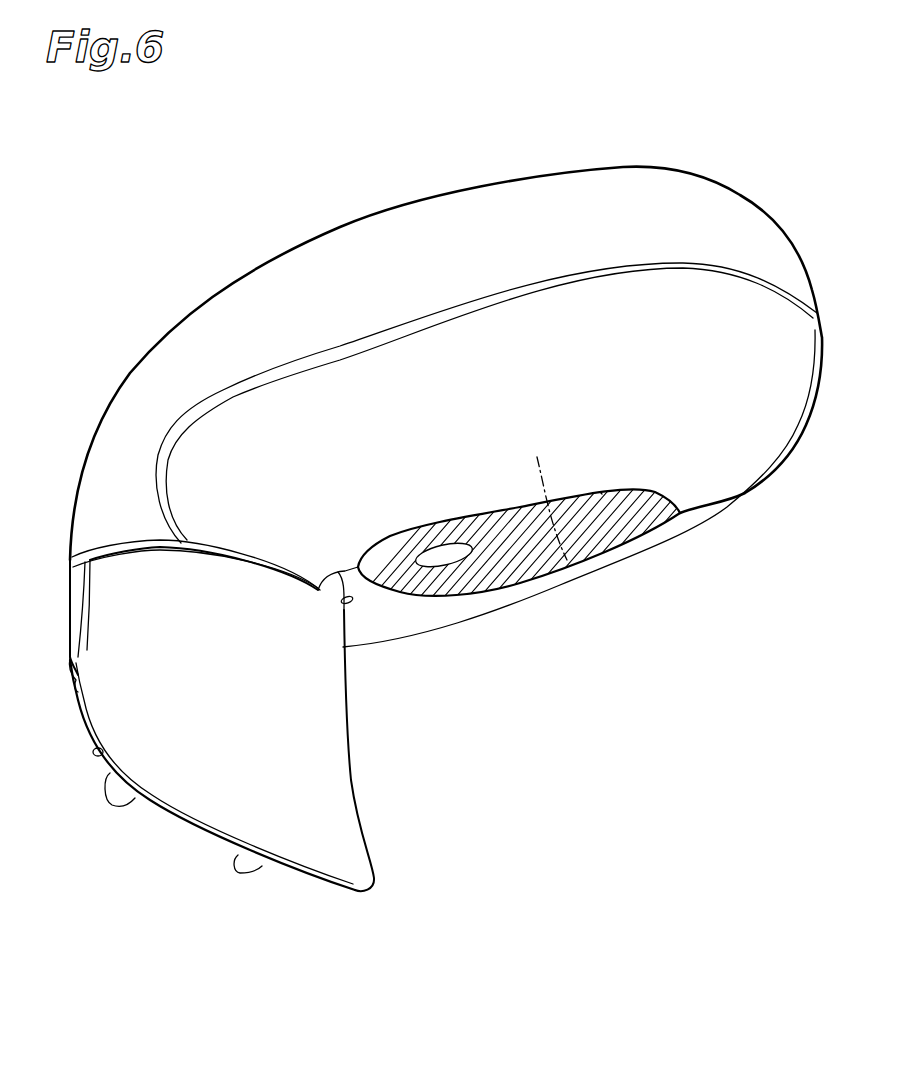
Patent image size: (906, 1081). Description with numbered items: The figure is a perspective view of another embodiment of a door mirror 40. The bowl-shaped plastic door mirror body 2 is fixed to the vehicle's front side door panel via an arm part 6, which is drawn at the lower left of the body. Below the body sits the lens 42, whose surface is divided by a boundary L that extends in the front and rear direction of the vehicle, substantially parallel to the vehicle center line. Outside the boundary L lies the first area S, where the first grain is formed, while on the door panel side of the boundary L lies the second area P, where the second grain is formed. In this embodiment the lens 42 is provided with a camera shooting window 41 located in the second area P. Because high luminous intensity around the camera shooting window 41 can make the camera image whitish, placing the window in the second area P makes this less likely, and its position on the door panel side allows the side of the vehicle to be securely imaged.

The door mirror 40 is at (232, 197).
The door mirror body 2 is at (622, 165).
The lens 42 is at (665, 495).
The first area S is at (600, 492).
The boundary L is at (543, 485).
The second area P is at (477, 527).
The camera shooting window 41 is at (437, 558).
The arm part 6 is at (342, 758).